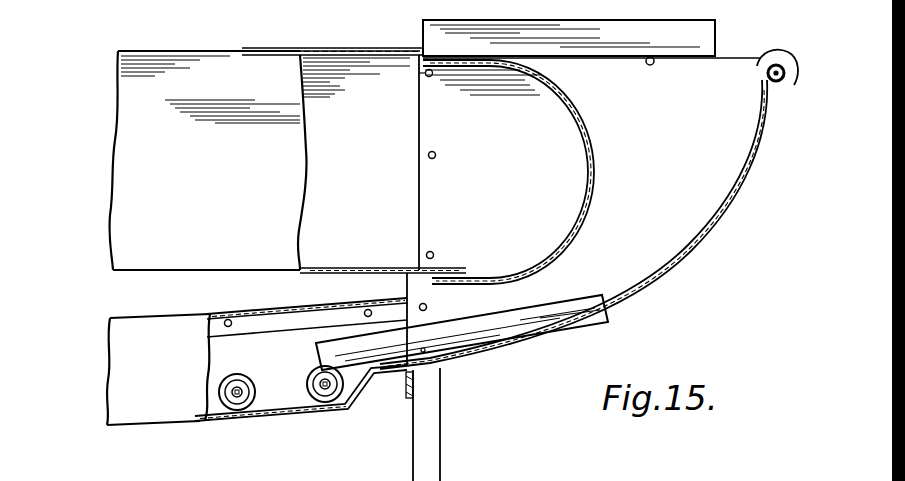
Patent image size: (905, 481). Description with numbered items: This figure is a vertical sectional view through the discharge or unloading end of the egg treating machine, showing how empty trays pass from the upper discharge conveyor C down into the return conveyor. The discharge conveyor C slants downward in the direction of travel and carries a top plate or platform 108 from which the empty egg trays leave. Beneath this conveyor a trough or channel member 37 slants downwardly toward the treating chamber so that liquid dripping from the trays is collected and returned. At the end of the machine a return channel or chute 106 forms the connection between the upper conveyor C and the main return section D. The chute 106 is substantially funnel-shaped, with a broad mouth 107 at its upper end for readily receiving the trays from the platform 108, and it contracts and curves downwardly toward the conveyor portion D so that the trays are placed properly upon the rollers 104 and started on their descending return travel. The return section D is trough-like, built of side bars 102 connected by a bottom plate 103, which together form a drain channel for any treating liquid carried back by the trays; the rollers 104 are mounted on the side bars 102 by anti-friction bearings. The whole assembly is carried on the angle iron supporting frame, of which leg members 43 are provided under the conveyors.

The discharge conveyor C is at (100, 222).
The main section of return conveyor D is at (142, 429).
The trough or channel member 37 is at (312, 271).
The leg members 43 is at (414, 428).
The side bars 102 is at (120, 386).
The bottom plate 103 is at (212, 422).
The rollers 104 is at (312, 388).
The return channel or chute 106 is at (688, 258).
The broad mouth 107 is at (692, 88).
The top plate or platform 108 is at (580, 58).